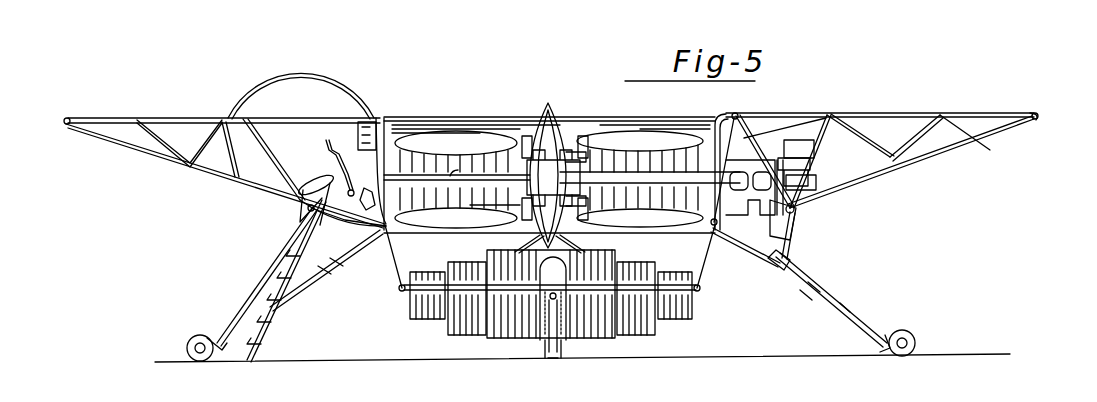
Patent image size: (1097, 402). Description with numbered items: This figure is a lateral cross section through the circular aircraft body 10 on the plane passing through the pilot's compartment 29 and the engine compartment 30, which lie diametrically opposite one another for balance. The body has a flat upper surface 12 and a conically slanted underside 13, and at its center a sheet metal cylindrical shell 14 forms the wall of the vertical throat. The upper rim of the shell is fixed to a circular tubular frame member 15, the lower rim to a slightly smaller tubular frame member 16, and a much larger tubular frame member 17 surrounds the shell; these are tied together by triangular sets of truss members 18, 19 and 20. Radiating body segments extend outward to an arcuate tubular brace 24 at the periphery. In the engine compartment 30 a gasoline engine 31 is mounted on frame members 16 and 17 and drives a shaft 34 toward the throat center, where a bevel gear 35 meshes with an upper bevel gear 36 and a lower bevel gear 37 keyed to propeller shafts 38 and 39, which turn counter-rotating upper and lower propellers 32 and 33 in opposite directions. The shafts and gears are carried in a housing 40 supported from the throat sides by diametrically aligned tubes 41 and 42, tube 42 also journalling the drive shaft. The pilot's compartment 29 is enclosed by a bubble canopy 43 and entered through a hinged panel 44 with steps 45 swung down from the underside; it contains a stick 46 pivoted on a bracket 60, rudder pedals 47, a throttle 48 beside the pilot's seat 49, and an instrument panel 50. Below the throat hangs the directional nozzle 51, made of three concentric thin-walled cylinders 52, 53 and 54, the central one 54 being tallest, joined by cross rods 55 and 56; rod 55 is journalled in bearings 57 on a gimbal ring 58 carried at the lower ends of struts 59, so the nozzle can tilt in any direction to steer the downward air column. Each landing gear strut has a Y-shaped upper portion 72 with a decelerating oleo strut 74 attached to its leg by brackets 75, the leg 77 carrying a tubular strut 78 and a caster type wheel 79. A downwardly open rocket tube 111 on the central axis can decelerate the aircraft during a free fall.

The body or airframe 10 is at (868, 111).
The upper surface 12 is at (962, 111).
The underside 13 is at (994, 138).
The cylindrical shell 14 is at (700, 117).
The upper tubular frame member 15 is at (738, 112).
The lower tubular frame member 16 is at (712, 240).
The outer tubular frame member 17 is at (796, 210).
The truss member 18 is at (744, 128).
The truss member 19 is at (748, 139).
The truss member 20 is at (792, 242).
The arcuately formed tubular brace 24 is at (1040, 113).
The pilot's compartment 29 is at (274, 108).
The engine compartment 30 is at (800, 146).
The gasoline engine 31 is at (818, 181).
The upper propeller 32 is at (506, 140).
The lower propeller 33 is at (612, 224).
The drive shaft 34 is at (610, 176).
The bevel gear 35 is at (534, 180).
The upper bevel gear 36 is at (527, 168).
The lower bevel gear 37 is at (470, 207).
The upper propeller shaft 38 is at (578, 157).
The lower propeller shaft 39 is at (578, 203).
The housing 40 is at (530, 202).
The tube 41 is at (456, 176).
The tube 42 is at (660, 190).
The bubble canopy 43 is at (322, 72).
The hinged panel or door 44 is at (276, 322).
The steps 45 is at (268, 264).
The stick 46 is at (324, 142).
The rudder pedals 47 is at (368, 190).
The throttle 48 is at (312, 170).
The pilot's seat 49 is at (264, 168).
The panel 50 is at (360, 124).
The directional nozzle 51 is at (450, 330).
The cylinder 52 is at (412, 312).
The cylinder 53 is at (470, 326).
The central cylinder 54 is at (600, 330).
The cross rod 55 is at (576, 285).
The cross rod 56 is at (558, 305).
The bearings 57 is at (403, 297).
The gimbal ring 58 is at (705, 290).
The struts 59 is at (585, 248).
The bracket 60 is at (350, 222).
The Y-shaped upper portion 72 is at (352, 260).
The decelerating oleo strut 74 is at (804, 228).
The brackets 75 is at (776, 272).
The leg 77 is at (808, 270).
The tubular strut 78 is at (850, 313).
The caster type wheel 79 is at (916, 343).
The rocket tube 111 is at (540, 332).